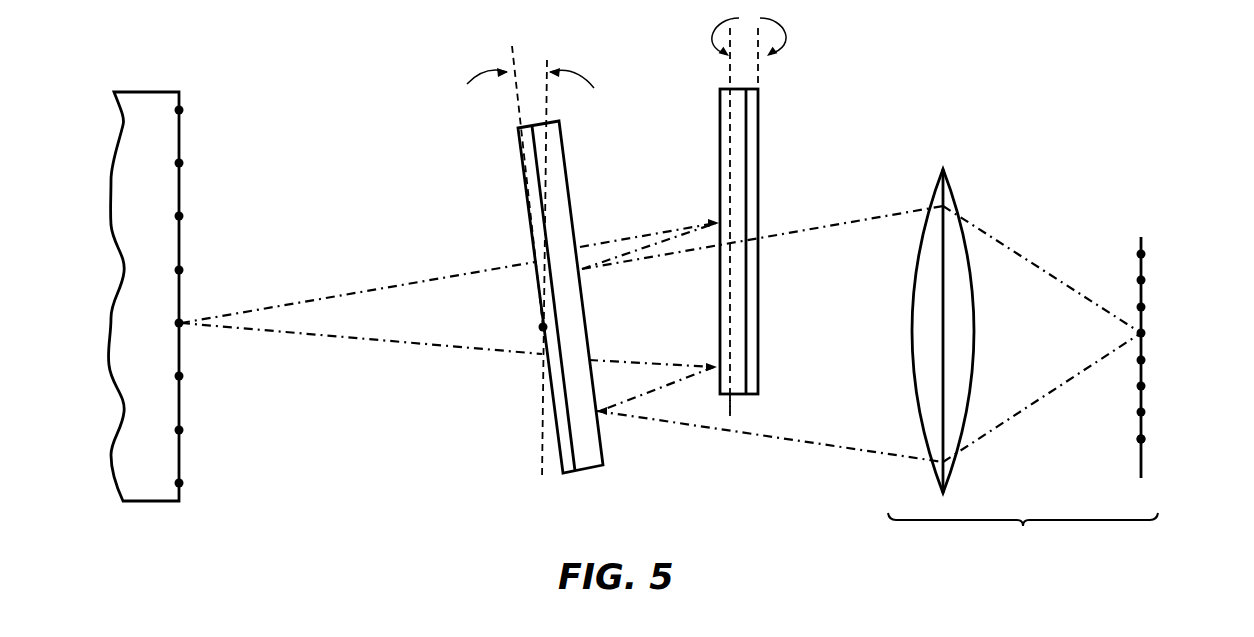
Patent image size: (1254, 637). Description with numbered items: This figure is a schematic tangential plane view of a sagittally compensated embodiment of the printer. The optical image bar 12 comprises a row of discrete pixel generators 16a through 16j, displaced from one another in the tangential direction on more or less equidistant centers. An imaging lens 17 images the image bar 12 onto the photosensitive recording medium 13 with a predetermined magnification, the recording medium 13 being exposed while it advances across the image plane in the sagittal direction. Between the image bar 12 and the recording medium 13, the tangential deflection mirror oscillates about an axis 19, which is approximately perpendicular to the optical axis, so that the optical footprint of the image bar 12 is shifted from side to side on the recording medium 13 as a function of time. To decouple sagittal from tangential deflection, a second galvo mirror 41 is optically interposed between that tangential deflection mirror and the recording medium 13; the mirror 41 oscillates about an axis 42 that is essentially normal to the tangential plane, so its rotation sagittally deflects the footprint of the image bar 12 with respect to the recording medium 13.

The recording medium 13 is at (172, 182).
The axis 19 is at (532, 319).
The second galvo mirror 41 is at (712, 248).
The axis 42 is at (723, 395).
The imaging lens 17 is at (968, 327).
The optical image bar 12 is at (1023, 535).
The pixel generator 16a is at (1136, 247).
The pixel generator 16j is at (1136, 432).